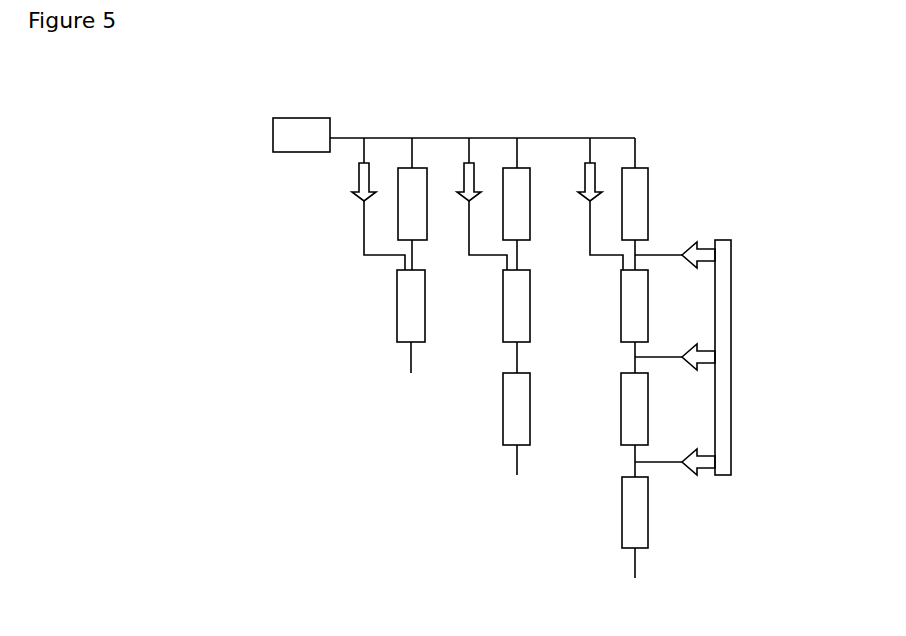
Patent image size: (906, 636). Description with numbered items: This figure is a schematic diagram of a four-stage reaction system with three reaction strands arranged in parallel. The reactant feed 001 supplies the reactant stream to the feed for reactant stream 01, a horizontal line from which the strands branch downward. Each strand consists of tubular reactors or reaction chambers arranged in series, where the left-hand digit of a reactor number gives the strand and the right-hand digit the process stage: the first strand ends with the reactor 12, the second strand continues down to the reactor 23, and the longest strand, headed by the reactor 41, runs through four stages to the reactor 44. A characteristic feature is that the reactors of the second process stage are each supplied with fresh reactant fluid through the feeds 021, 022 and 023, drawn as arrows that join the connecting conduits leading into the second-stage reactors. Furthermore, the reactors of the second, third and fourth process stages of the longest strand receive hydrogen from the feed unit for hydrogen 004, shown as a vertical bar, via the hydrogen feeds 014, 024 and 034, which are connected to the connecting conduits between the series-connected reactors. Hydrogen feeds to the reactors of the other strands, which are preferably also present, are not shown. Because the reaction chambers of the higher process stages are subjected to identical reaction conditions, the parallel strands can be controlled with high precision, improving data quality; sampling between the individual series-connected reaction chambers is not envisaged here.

The reactant feed 001 is at (303, 118).
The feed for reactant stream 01 is at (497, 138).
The reactor 41 is at (648, 180).
The hydrogen feed to the reactor 42 014 is at (657, 250).
The feed unit for hydrogen 004 is at (731, 307).
The feed of reactant stream to the reactor 21 021 is at (362, 215).
The feed of reactant stream to the reactor 32 022 is at (488, 255).
The feed of reactant stream to the reactor 42 023 is at (610, 255).
The hydrogen feed to the reactor 43 024 is at (655, 357).
The hydrogen feed to the reactor 44 034 is at (668, 463).
The reactor 12 is at (397, 328).
The reactor 23 is at (502, 430).
The reactor 44 is at (620, 512).